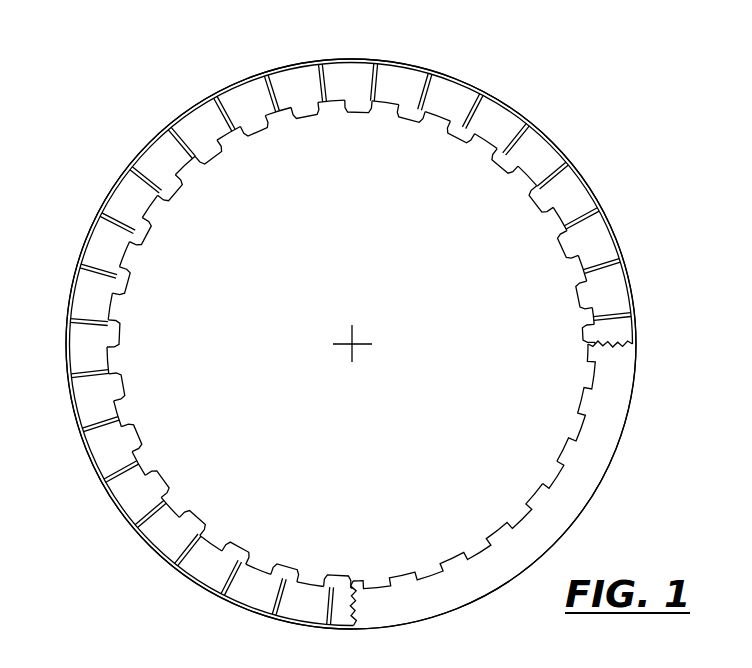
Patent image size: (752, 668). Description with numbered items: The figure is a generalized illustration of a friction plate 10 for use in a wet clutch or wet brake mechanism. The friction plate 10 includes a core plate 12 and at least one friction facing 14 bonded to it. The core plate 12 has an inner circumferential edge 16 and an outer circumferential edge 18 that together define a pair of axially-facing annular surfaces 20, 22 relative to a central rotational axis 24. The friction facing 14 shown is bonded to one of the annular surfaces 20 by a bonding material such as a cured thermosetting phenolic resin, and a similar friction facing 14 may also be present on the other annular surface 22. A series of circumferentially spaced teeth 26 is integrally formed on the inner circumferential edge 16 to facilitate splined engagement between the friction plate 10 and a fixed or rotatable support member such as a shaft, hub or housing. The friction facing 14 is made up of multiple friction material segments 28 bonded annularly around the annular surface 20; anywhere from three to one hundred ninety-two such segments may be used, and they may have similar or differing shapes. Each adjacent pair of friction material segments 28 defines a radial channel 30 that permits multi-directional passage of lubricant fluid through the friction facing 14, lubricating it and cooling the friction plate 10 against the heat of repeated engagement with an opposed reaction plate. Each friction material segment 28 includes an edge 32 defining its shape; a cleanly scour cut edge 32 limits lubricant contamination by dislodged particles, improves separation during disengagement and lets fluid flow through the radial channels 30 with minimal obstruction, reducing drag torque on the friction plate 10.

The friction plate 10 is at (130, 104).
The core plate 12 is at (641, 353).
The friction facing 14 is at (243, 578).
The inner circumferential edge 16 is at (425, 568).
The outer circumferential edge 18 is at (463, 606).
The annular surface 20 is at (610, 413).
The annular surface 22 is at (593, 452).
The central rotational axis 24 is at (358, 337).
The teeth 26 is at (541, 484).
The friction material segments 28 is at (97, 432).
The radial channel 30 is at (83, 262).
The edge 32 is at (284, 85).